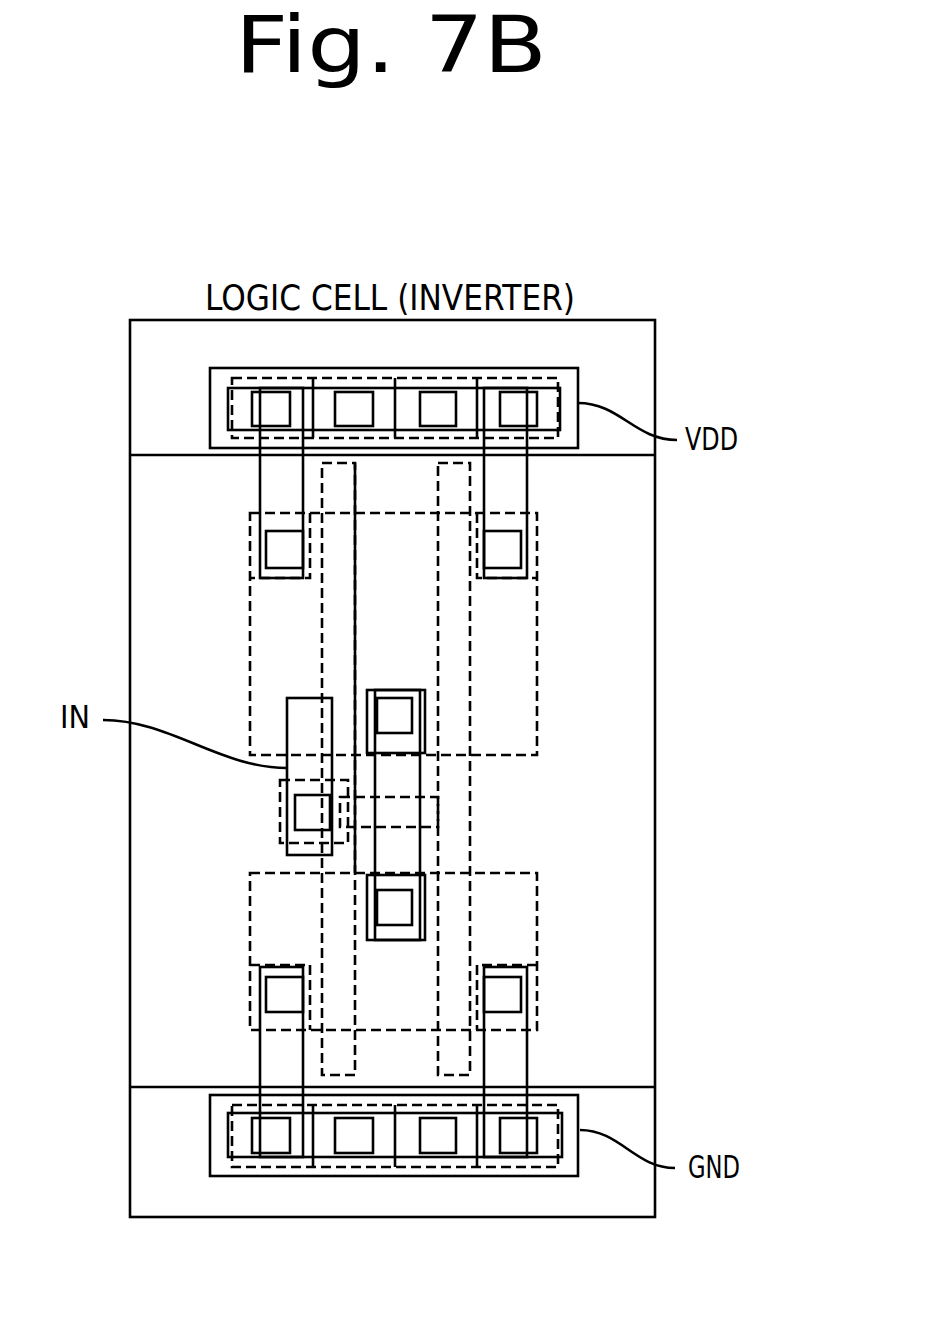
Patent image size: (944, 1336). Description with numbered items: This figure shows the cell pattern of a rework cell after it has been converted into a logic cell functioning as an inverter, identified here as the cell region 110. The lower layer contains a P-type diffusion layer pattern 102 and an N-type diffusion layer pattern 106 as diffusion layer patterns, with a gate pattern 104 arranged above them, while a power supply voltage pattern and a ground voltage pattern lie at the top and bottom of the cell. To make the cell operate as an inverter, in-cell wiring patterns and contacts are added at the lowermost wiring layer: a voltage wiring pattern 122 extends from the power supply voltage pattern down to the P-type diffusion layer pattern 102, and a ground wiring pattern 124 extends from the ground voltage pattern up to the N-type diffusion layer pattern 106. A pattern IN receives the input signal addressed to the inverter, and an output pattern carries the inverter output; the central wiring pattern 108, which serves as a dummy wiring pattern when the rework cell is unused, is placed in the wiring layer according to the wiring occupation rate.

The P-type diffusion layer pattern 102 is at (250, 625).
The gate pattern 104 is at (470, 787).
The N-type diffusion layer pattern 106 is at (250, 923).
The dummy wiring pattern 108 is at (420, 850).
The logic cell (inverter) region 110 is at (655, 613).
The voltage wiring pattern 122 is at (530, 480).
The ground wiring pattern 124 is at (530, 1060).